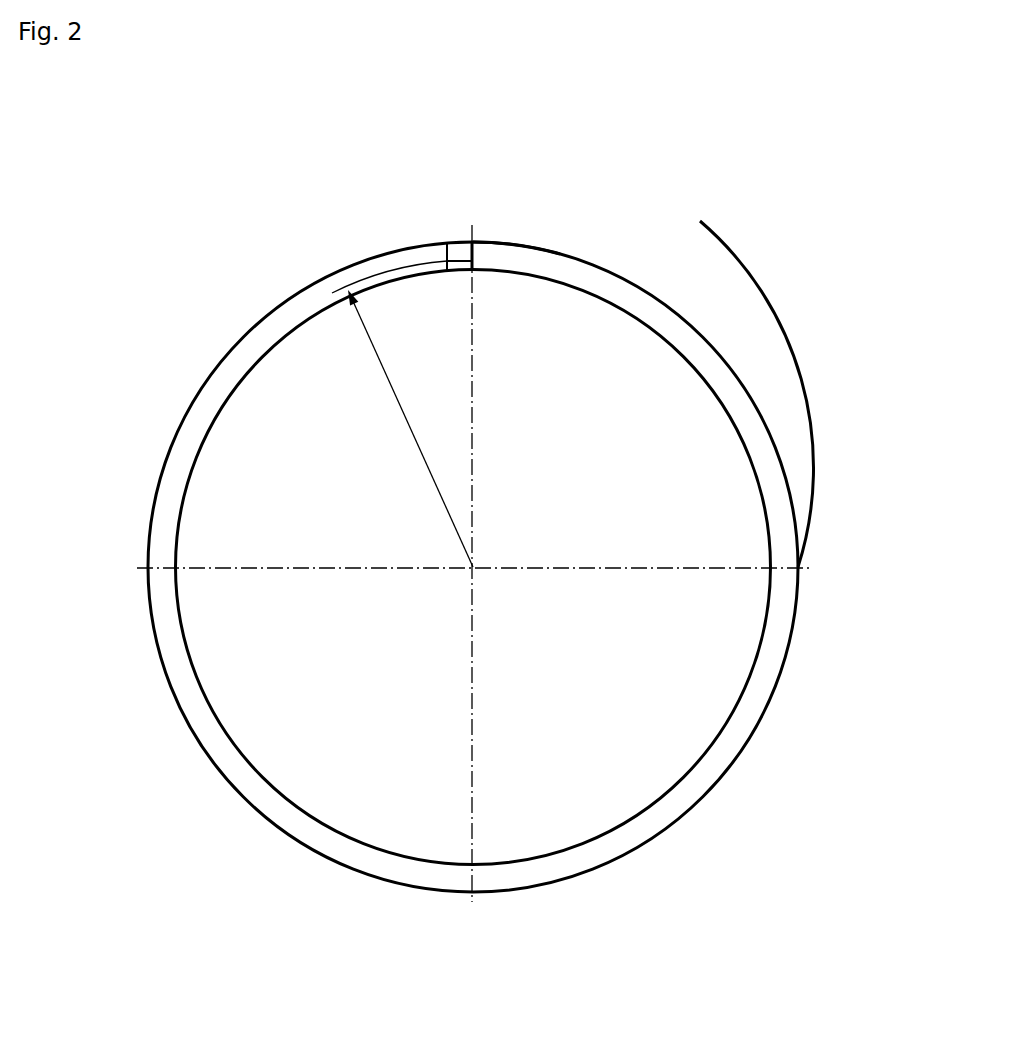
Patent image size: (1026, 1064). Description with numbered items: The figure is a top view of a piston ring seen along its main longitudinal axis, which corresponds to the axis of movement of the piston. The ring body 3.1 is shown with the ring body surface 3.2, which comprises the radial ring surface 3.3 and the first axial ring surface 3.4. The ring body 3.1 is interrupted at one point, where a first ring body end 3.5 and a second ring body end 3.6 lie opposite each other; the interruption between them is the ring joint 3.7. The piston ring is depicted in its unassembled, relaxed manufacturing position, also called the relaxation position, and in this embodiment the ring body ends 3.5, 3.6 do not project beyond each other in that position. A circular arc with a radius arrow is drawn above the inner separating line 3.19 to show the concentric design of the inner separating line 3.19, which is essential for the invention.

The ring body 3.1 is at (480, 516).
The ring body surface 3.2 is at (716, 345).
The radial ring surface 3.3 is at (765, 417).
The first axial ring surface 3.4 is at (672, 325).
The first ring body end 3.5 is at (456, 252).
The second ring body end 3.6 is at (500, 227).
The ring joint 3.7 is at (473, 222).
The inner separating line 3.19 is at (457, 262).